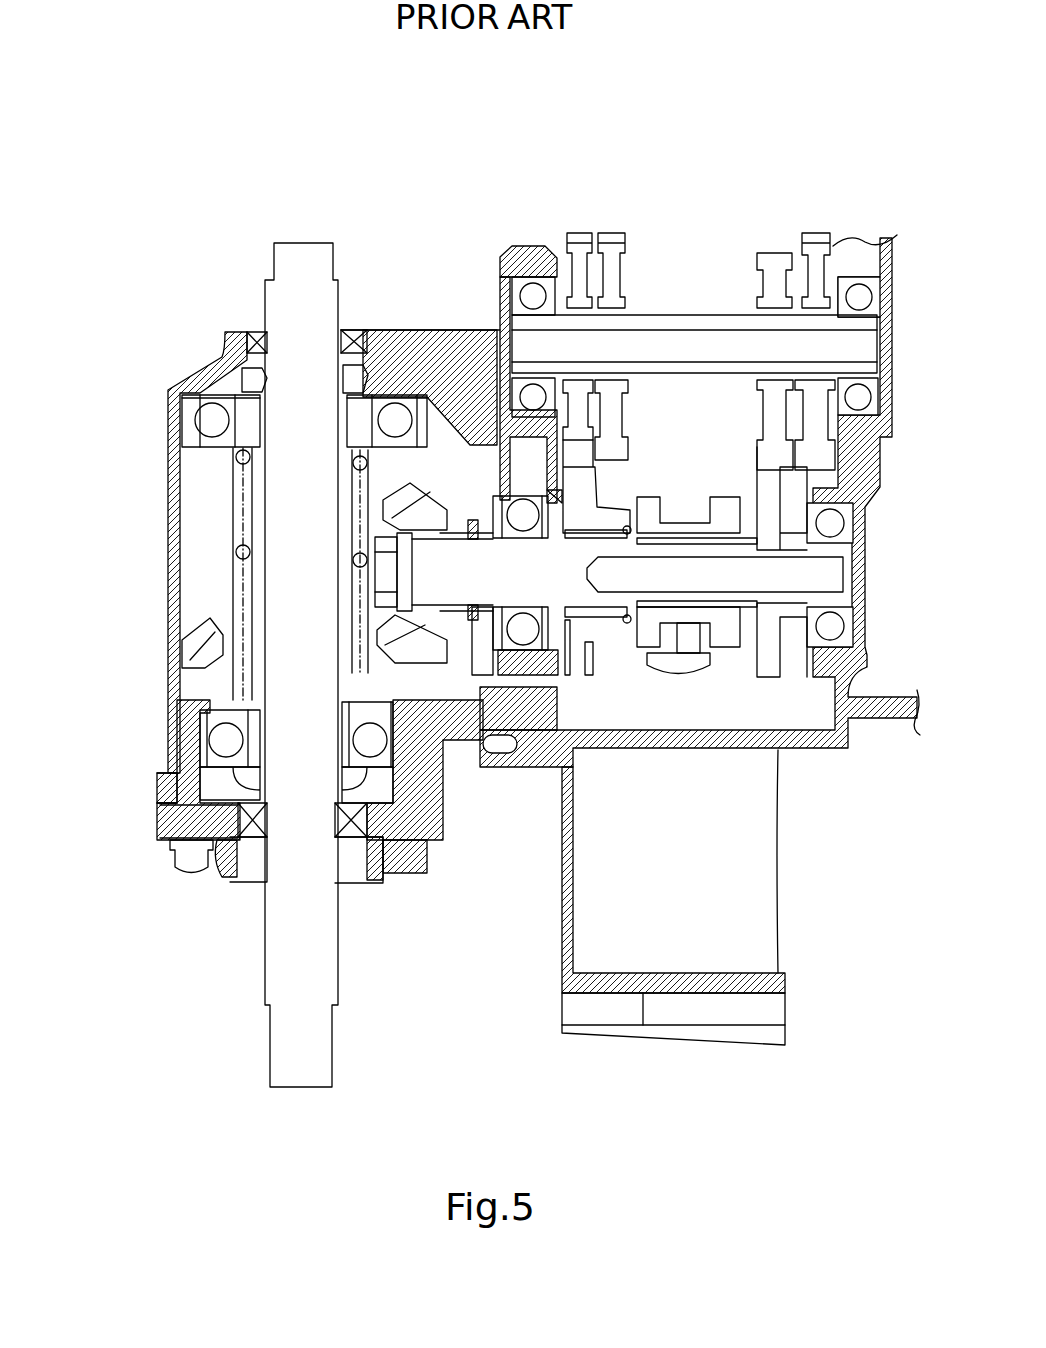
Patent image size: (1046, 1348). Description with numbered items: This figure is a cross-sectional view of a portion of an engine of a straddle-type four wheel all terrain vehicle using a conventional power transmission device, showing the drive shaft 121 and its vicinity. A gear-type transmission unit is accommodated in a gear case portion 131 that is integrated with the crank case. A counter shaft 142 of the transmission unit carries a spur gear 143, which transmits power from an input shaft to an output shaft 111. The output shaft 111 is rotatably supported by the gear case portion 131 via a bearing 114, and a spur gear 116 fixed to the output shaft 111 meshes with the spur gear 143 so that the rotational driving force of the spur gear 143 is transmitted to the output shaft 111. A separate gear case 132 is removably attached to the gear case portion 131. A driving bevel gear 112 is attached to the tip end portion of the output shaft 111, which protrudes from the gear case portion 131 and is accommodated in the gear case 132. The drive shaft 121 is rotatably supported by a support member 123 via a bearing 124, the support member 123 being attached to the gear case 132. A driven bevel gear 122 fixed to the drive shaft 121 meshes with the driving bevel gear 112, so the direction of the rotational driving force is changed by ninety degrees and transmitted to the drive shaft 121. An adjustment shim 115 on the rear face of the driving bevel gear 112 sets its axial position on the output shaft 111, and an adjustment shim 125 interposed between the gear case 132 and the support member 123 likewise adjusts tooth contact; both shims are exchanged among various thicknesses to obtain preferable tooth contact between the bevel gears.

The output shaft 111 is at (580, 590).
The driving bevel gear 112 is at (403, 490).
The bearing 114 is at (497, 497).
The adjustment shim 115 is at (470, 617).
The spur gear 116 is at (580, 492).
The drive shaft 121 is at (323, 922).
The driven bevel gear 122 is at (200, 630).
The support member 123 is at (160, 810).
The bearing 124 is at (203, 723).
The adjustment shim 125 is at (155, 800).
The gear case portion 131 is at (497, 255).
The gear case 132 is at (190, 363).
The counter shaft 142 is at (710, 327).
The spur gear 143 is at (580, 253).